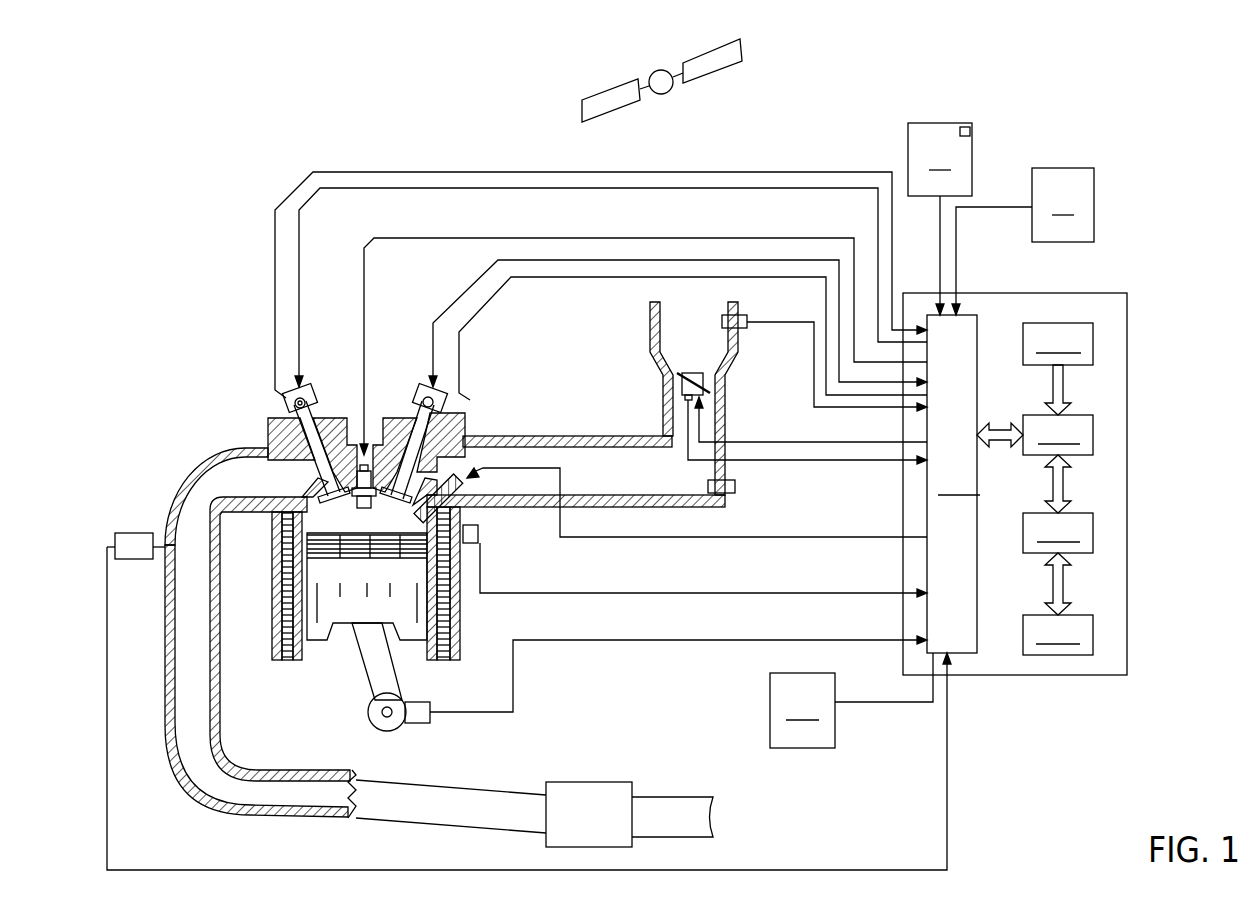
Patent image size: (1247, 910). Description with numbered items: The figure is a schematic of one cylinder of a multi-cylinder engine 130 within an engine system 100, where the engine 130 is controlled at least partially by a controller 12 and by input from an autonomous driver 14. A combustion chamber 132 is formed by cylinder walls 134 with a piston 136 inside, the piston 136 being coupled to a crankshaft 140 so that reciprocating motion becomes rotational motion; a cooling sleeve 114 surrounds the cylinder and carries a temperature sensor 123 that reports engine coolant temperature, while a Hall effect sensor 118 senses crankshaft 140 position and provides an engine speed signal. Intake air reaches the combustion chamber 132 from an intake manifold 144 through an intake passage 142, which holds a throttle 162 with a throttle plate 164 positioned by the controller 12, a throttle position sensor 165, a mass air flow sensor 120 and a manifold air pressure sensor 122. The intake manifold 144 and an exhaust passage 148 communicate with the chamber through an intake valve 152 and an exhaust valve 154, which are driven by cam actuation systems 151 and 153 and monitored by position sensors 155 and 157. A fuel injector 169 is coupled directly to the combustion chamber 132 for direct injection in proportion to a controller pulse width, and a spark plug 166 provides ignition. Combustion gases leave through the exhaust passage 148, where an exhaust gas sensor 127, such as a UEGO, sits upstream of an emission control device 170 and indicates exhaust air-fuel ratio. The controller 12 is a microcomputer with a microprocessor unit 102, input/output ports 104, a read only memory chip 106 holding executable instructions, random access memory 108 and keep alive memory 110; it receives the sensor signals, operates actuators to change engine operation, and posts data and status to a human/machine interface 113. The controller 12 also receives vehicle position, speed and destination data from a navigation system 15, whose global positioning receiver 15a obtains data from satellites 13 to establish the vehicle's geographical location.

The engine system 100 is at (1162, 96).
The satellites 13 is at (745, 48).
The navigation system 15 is at (940, 219).
The global positioning receiver 15a is at (970, 130).
The autonomous driver 14 is at (1023, 241).
The controller 12 is at (1118, 293).
The input/output ports 104 is at (980, 322).
The read only memory chip 106 is at (1093, 342).
The microprocessor unit 102 is at (1093, 432).
The random access memory 108 is at (1093, 532).
The keep alive memory 110 is at (1093, 636).
The human/machine interface 113 is at (851, 700).
The engine 130 is at (203, 371).
The exhaust passage 148 is at (258, 485).
The emission control device 170 is at (534, 813).
The exhaust gas sensor 127 is at (115, 540).
The cylinder walls 134 is at (303, 665).
The combustion chamber 132 is at (287, 606).
The cooling sleeve 114 is at (455, 660).
The intake valve 152 is at (403, 490).
The cam actuation system 153 is at (315, 380).
The position sensor 157 is at (292, 403).
The exhaust valve 154 is at (278, 464).
The position sensor 155 is at (442, 400).
The cam actuation system 151 is at (417, 383).
The spark plug 166 is at (358, 453).
The fuel injector 169 is at (458, 512).
The temperature sensor 123 is at (478, 545).
The piston 136 is at (348, 625).
The crankshaft 140 is at (375, 728).
The Hall effect sensor 118 is at (418, 724).
The intake manifold 144 is at (627, 481).
The intake passage 142 is at (672, 310).
The mass air flow sensor 120 is at (742, 315).
The manifold air pressure sensor 122 is at (730, 495).
The throttle 162 is at (722, 380).
The throttle plate 164 is at (677, 380).
The throttle position sensor 165 is at (685, 398).